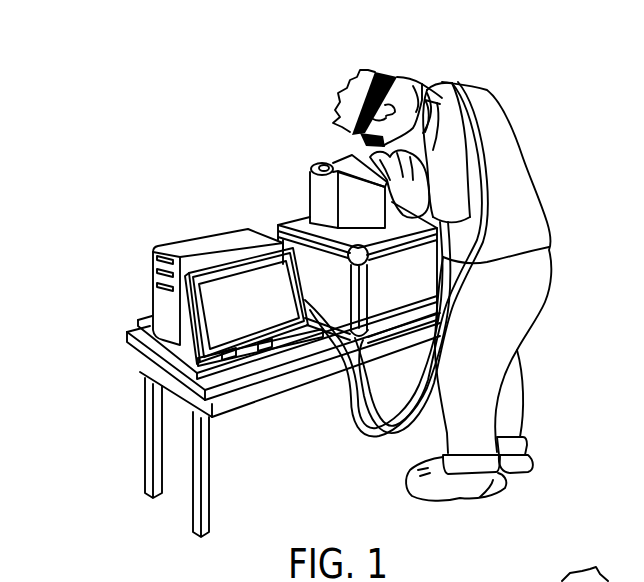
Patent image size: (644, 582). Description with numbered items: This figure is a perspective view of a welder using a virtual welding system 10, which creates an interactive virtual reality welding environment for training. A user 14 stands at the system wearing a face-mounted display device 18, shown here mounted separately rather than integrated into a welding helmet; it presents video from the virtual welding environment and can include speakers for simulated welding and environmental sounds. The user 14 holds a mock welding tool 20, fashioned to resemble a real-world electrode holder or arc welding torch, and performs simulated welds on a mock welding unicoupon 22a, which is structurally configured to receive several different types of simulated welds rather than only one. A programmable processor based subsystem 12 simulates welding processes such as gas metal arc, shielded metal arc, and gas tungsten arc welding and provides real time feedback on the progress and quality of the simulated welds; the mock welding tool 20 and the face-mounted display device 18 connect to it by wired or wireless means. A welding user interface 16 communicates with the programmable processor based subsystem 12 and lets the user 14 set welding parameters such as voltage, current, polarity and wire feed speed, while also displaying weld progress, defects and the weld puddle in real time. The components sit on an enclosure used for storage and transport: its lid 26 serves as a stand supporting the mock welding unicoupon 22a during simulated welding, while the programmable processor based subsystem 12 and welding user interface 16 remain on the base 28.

The virtual welding system 10 is at (212, 148).
The programmable processor based subsystem 12 is at (176, 244).
The user 14 is at (537, 191).
The welding user interface 16 is at (140, 338).
The face-mounted display device 18 is at (385, 70).
The mock welding tool 20 is at (320, 160).
The mock welding unicoupon 22a is at (310, 165).
The lid 26 is at (278, 224).
The base 28 is at (143, 373).